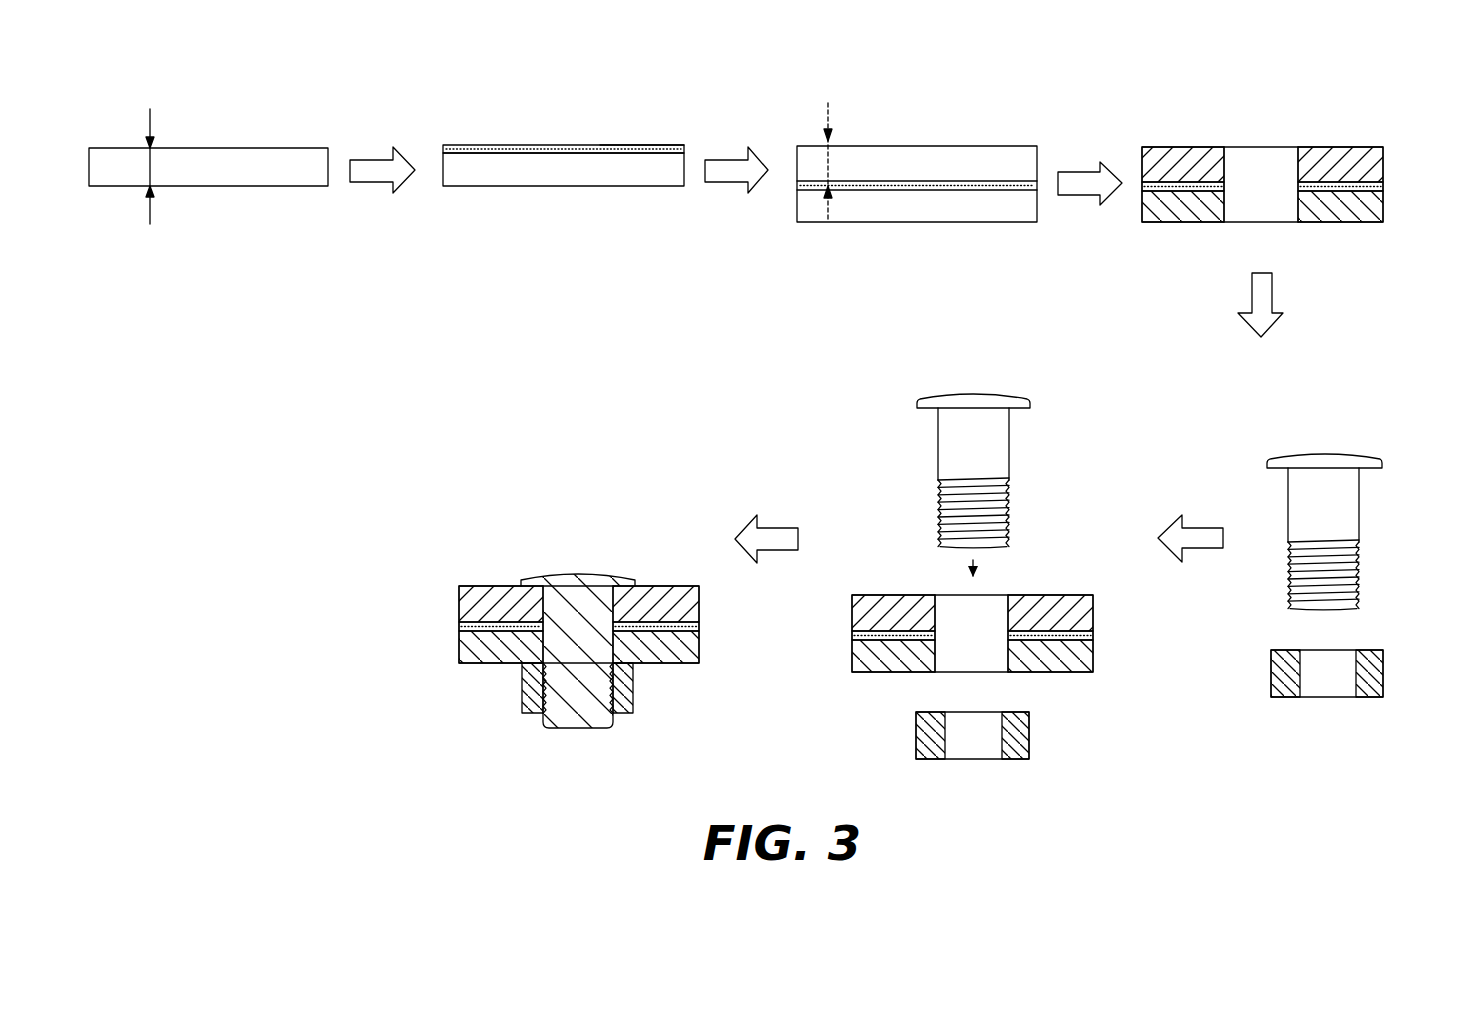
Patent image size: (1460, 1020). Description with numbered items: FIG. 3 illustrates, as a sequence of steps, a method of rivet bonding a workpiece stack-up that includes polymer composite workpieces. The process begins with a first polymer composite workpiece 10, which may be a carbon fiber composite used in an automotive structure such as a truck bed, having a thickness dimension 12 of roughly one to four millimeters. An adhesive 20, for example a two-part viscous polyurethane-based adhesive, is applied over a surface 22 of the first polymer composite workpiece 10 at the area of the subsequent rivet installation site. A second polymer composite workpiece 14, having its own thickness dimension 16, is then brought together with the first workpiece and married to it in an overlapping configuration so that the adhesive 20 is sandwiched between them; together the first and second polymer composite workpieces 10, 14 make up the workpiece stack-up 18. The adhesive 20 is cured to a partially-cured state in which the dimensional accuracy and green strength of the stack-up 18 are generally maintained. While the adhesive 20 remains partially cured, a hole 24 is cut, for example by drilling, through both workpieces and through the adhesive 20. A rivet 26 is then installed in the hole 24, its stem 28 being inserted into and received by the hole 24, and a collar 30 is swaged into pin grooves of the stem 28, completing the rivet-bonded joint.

The first polymer composite workpiece 10 is at (218, 165).
The thickness dimension 12 is at (150, 163).
The second polymer composite workpiece 14 is at (908, 165).
The thickness dimension 16 is at (828, 160).
The workpiece stack-up 18 is at (1014, 124).
The adhesive 20 is at (577, 148).
The surface 22 is at (628, 153).
The hole 24 is at (1298, 165).
The rivet 26 is at (1380, 534).
The stem 28 is at (1340, 500).
The collar 30 is at (1368, 672).